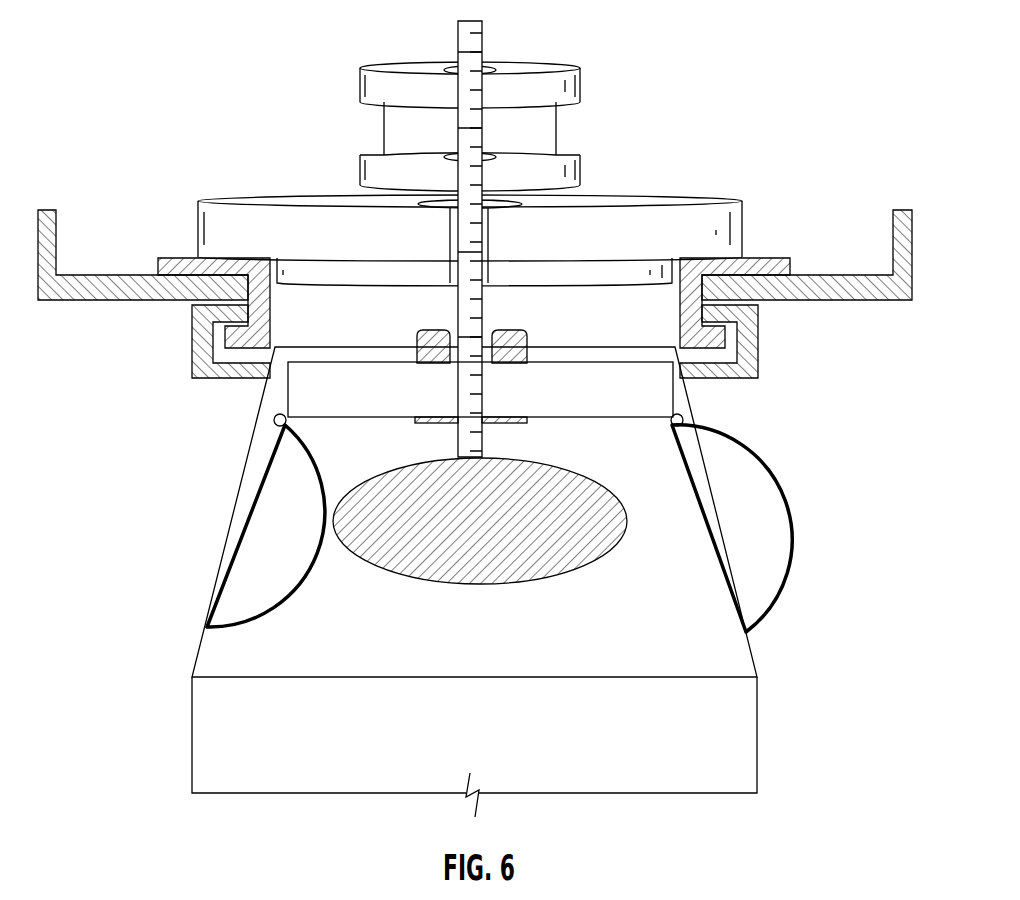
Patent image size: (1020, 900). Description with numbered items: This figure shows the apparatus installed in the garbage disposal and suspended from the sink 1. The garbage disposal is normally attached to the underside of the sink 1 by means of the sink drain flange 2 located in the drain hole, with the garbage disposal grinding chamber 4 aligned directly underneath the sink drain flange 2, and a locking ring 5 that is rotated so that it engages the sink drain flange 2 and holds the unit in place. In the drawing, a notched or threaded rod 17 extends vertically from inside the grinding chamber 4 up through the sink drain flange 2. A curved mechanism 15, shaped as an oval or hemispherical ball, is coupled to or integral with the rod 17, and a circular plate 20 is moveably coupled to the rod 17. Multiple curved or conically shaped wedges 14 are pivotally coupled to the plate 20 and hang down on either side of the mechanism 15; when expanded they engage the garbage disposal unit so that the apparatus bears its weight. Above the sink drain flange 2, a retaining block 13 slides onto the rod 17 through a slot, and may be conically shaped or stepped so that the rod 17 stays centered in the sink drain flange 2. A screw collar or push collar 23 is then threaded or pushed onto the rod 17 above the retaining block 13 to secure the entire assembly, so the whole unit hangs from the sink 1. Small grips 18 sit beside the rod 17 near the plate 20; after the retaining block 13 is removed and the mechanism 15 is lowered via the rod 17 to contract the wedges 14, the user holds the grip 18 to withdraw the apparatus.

The sink 1 is at (128, 306).
The sink drain flange 2 is at (786, 250).
The garbage disposal grinding chamber 4 is at (328, 628).
The locking ring 5 is at (724, 383).
The retaining block 13 is at (195, 203).
The wedges 14 is at (697, 532).
The mechanism 15 is at (524, 585).
The rod 17 is at (486, 46).
The grip 18 is at (526, 328).
The plate 20 is at (300, 393).
The screw collar or push collar 23 is at (357, 78).